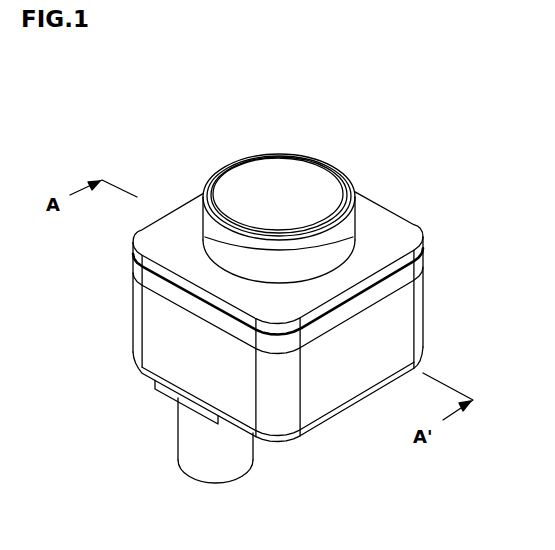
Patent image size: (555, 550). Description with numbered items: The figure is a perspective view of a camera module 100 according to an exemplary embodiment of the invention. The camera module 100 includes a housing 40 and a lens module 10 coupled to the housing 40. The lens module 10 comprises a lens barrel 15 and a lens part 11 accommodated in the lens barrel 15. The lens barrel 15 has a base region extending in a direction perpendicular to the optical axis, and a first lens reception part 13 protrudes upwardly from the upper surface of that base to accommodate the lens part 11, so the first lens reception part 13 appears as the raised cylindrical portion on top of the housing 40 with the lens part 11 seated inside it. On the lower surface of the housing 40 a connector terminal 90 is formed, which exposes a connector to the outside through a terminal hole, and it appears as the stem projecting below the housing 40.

The camera module 100 is at (140, 81).
The lens module 10 is at (362, 218).
The lens part 11 is at (285, 180).
The first lens reception part 13 is at (203, 238).
The lens barrel 15 is at (425, 244).
The housing 40 is at (423, 307).
The connector terminal 90 is at (188, 444).